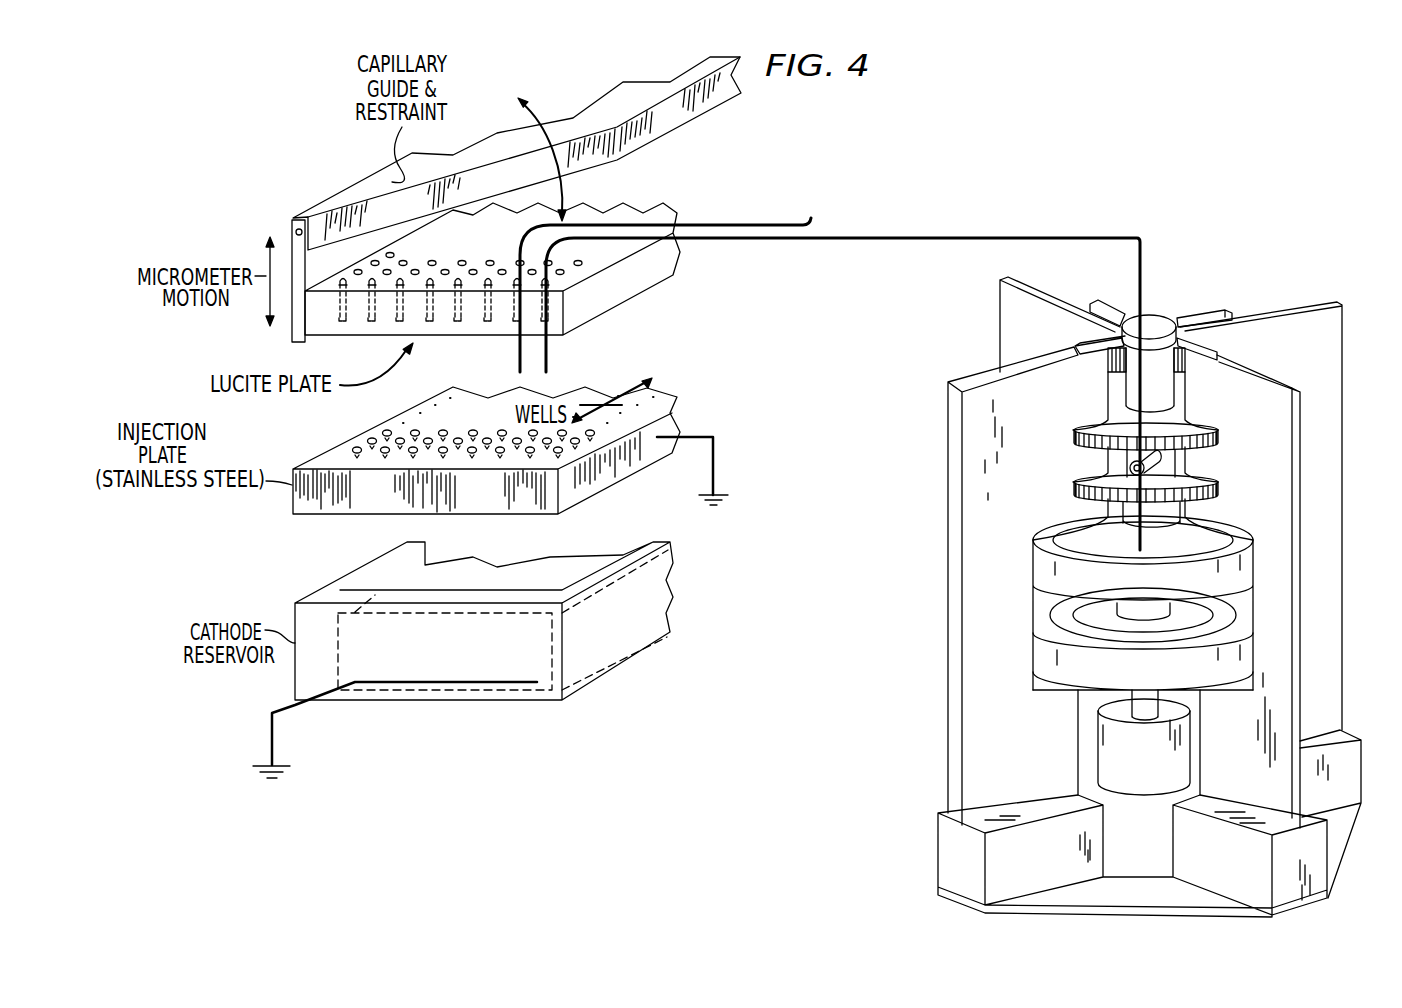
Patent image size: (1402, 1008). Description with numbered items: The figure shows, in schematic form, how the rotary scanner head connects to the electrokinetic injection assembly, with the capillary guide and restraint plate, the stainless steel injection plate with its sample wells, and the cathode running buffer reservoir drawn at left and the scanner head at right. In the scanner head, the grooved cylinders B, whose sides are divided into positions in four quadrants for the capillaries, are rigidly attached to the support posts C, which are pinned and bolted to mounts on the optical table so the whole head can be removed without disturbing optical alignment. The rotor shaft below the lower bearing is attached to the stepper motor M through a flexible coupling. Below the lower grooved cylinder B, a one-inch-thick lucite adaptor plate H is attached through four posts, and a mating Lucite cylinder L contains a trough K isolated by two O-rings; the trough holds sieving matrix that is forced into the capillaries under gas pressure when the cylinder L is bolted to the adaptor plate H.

The grooved cylinders B is at (1185, 427).
The support posts C is at (1295, 325).
The lucite adaptor plate H is at (1243, 572).
The trough K is at (1225, 615).
The Lucite cylinder L is at (1245, 658).
The stepper motor M is at (1147, 758).